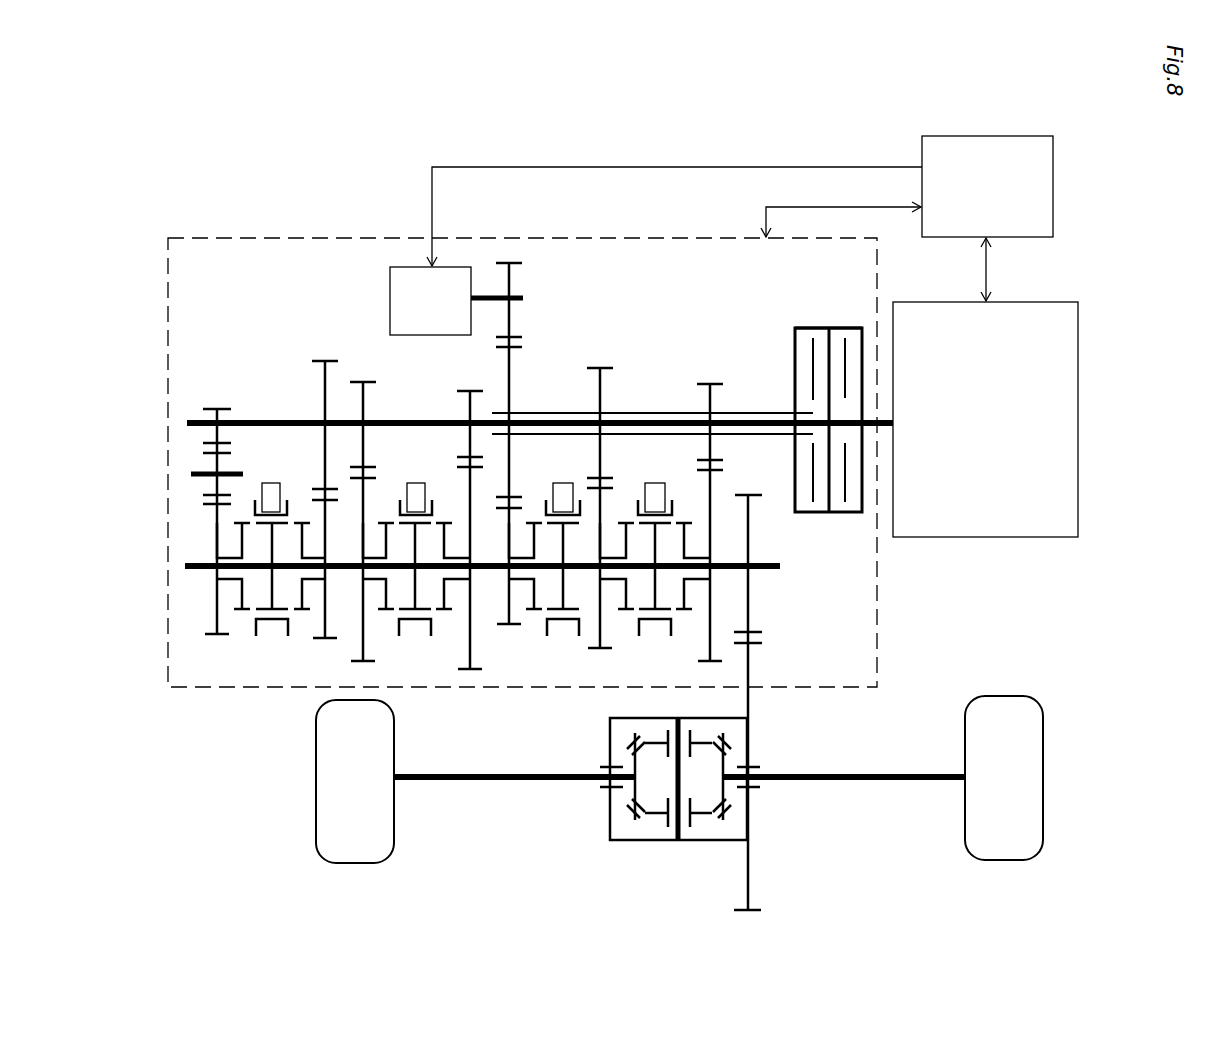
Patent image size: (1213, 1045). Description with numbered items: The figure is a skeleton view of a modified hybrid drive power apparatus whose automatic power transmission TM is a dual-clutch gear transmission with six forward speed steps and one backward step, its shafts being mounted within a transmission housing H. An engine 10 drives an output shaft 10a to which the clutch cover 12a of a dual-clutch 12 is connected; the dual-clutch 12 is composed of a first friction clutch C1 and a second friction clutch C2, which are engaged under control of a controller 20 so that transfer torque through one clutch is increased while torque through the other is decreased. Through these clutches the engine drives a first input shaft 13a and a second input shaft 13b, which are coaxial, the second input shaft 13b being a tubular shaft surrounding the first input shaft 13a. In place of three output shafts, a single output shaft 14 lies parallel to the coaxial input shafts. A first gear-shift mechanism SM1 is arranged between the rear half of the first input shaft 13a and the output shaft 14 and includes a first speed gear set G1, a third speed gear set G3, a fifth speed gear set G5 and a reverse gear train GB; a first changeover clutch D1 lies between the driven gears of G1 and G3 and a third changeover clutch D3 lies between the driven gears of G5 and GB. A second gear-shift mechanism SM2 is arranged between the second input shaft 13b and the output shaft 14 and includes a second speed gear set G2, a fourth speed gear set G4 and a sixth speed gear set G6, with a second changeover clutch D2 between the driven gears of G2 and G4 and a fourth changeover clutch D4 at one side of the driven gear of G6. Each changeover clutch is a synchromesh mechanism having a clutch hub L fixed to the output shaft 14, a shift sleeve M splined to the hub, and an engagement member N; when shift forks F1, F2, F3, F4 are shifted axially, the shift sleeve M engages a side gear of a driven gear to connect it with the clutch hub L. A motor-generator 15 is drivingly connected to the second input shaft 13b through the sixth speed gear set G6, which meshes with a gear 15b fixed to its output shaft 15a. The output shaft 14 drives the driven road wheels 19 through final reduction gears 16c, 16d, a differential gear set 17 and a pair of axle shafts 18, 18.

The engine 10 is at (1001, 527).
The output shaft of engine 10a is at (884, 412).
The dual-clutch 12 is at (836, 321).
The clutch cover 12a is at (812, 327).
The first input shaft 13a is at (400, 419).
The second input shaft 13b is at (746, 412).
The output shaft 14 is at (200, 563).
The motor-generator 15 is at (397, 295).
The output shaft of motor-generator 15a is at (518, 294).
The gear 15b is at (513, 319).
The final reduction gear 16c is at (752, 606).
The final reduction gear 16d is at (750, 705).
The differential gear set 17 is at (606, 817).
The axle shaft 18 is at (490, 785).
The driven road wheels 19 is at (326, 764).
The controller 20 is at (977, 145).
The automatic power transmission TM is at (226, 233).
The reverse gear train GB is at (215, 404).
The first speed gear set G1 is at (467, 387).
The second speed gear set G2 is at (713, 376).
The third speed gear set G3 is at (362, 379).
The fourth speed gear set G4 is at (614, 360).
The fifth speed gear set G5 is at (316, 357).
The sixth speed gear set G6 is at (517, 385).
The shift fork F1 is at (417, 493).
The shift fork F2 is at (655, 493).
The shift fork F3 is at (272, 493).
The shift fork F4 is at (563, 493).
The shift sleeve M is at (287, 511).
The clutch hub L is at (268, 534).
The engagement member N is at (244, 614).
The first changeover clutch D1 is at (415, 625).
The second changeover clutch D2 is at (655, 625).
The third changeover clutch D3 is at (272, 625).
The fourth changeover clutch D4 is at (563, 625).
The first friction clutch C1 is at (850, 513).
The second friction clutch C2 is at (806, 513).
The first gear-shift mechanism SM1 is at (227, 680).
The second gear-shift mechanism SM2 is at (508, 690).
The transmission housing H is at (878, 610).